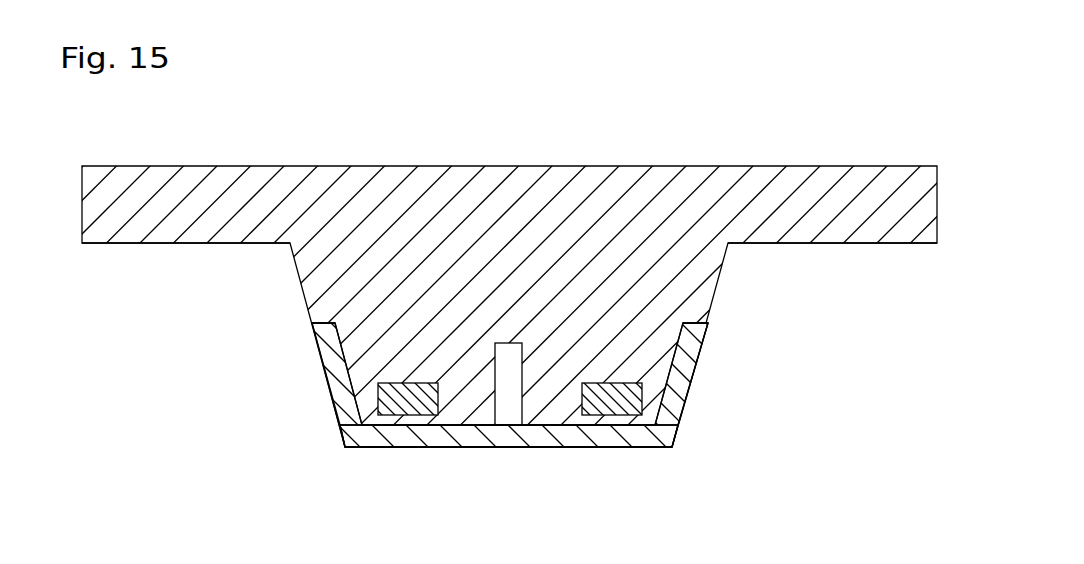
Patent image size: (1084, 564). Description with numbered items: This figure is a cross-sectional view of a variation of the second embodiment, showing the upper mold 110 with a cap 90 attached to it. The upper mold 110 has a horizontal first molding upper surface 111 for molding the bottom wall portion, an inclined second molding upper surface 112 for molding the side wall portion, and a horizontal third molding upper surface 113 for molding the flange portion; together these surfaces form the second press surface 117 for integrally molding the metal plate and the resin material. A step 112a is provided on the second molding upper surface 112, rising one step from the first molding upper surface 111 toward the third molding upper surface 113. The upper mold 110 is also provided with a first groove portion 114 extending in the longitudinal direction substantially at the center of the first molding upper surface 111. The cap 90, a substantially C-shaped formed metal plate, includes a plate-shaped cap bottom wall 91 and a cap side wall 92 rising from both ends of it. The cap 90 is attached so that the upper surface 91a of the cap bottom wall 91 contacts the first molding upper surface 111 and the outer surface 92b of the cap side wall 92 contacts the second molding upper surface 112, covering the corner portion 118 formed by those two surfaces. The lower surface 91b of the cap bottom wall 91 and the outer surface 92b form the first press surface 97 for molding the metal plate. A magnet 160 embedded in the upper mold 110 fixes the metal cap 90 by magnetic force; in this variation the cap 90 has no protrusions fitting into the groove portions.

The upper mold 110 is at (530, 177).
The third molding upper surface 113 is at (160, 245).
The first groove portion 114 is at (523, 362).
The second molding upper surface 112 is at (330, 378).
The step 112a is at (320, 326).
The cap 90 is at (690, 381).
The cap side wall 92 is at (347, 416).
The outer surface of the cap side wall 92b is at (343, 433).
The cap bottom wall 91 is at (547, 437).
The upper surface of the cap bottom wall 91a is at (455, 425).
The lower surface of the cap bottom wall 91b is at (566, 447).
The magnet 160 is at (430, 415).
The corner portion 118 is at (345, 434).
The first molding upper surface 111 is at (393, 444).
The second press surface 117 is at (495, 434).
The first press surface 97 is at (658, 462).